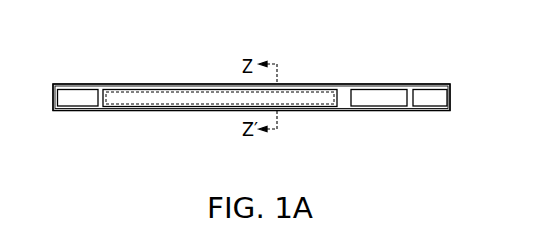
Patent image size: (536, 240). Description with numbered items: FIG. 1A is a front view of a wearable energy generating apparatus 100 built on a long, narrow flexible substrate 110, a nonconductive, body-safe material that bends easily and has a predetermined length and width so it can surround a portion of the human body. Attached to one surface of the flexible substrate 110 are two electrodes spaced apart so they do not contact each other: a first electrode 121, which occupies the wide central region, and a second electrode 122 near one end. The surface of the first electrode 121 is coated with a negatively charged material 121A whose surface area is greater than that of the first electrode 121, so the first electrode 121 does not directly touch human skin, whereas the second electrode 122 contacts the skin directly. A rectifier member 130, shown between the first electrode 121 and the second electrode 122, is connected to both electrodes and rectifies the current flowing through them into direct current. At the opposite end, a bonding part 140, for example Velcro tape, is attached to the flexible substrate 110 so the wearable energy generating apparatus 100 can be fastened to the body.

The wearable energy generating apparatus 100 is at (131, 41).
The flexible substrate 110 is at (343, 88).
The first electrode 121 is at (142, 103).
The negatively charged material 121A is at (188, 91).
The second electrode 122 is at (437, 103).
The rectifier member 130 is at (382, 103).
The bonding part 140 is at (77, 90).